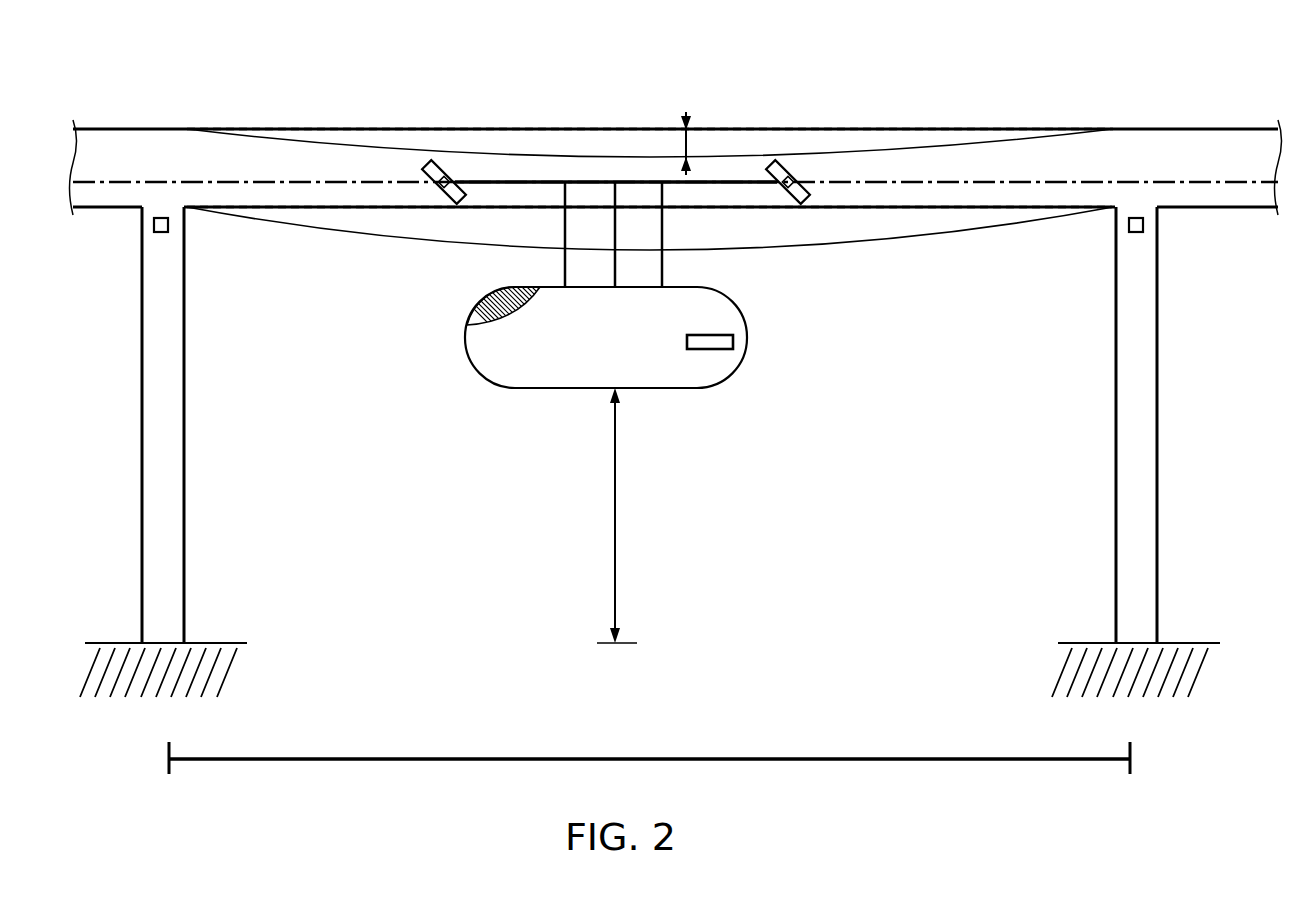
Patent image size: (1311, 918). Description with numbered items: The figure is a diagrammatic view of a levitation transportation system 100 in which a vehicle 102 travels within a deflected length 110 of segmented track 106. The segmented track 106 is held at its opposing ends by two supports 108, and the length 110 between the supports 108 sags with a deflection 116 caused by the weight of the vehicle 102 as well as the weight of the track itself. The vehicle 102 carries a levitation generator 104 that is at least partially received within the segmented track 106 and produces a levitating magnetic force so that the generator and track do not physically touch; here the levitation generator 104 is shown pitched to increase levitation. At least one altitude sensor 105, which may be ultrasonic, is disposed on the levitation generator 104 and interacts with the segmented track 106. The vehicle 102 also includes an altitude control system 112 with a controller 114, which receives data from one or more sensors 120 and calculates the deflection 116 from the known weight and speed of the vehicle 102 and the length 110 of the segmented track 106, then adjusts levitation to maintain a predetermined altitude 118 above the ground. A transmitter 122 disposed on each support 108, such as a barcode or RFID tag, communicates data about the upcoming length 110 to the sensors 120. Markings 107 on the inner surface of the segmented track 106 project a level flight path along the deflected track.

The levitation transportation system 100 is at (1098, 44).
The vehicle 102 is at (517, 388).
The levitation generator 104 is at (575, 182).
The altitude sensor 105 is at (441, 178).
The segmented track 106 is at (1166, 129).
The markings 107 is at (1218, 182).
The support 108 is at (184, 390).
The length 110 is at (752, 758).
The altitude control system 112 is at (711, 350).
The controller 114 is at (733, 341).
The deflection 116 is at (689, 142).
The predetermined altitude 118 is at (617, 523).
The sensors 120 is at (691, 350).
The transmitter 122 is at (168, 225).